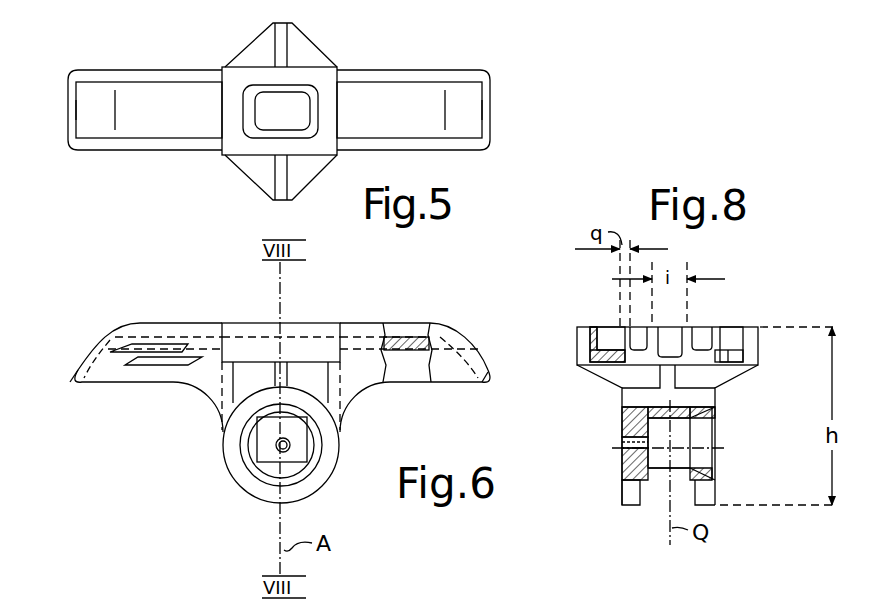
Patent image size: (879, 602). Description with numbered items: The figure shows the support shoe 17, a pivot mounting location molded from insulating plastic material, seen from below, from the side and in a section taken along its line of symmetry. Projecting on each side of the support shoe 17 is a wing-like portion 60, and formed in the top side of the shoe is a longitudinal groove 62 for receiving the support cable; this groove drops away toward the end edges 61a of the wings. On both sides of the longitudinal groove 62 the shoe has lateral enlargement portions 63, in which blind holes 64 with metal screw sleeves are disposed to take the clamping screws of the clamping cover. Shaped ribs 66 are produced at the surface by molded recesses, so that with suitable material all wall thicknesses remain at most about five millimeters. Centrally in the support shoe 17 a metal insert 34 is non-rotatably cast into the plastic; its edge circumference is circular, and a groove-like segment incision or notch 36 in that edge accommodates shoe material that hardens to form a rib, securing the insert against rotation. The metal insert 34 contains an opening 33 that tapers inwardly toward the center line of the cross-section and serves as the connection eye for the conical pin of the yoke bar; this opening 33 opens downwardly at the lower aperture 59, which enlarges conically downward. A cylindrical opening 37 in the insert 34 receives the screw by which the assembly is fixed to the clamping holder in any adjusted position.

In FIG. 5, the support shoe 17 is at (393, 59).
In FIG. 6, the support shoe 17 is at (158, 306).
In FIG. 8, the support shoe 17 is at (782, 325).
In FIG. 8, the opening 33 is at (705, 447).
In FIG. 6, the metal insert 34 is at (260, 468).
In FIG. 8, the metal insert 34 is at (634, 472).
In FIG. 6, the segment incision or notch 36 is at (268, 405).
In FIG. 8, the segment incision or notch 36 is at (622, 437).
In FIG. 8, the cylindrical opening 37 is at (622, 457).
In FIG. 8, the lower aperture 59 is at (658, 494).
In FIG. 6, the wing-like portion 60 is at (102, 373).
In FIG. 5, the end edge 61a is at (68, 108).
In FIG. 6, the end edge 61a is at (64, 386).
In FIG. 8, the longitudinal groove 62 is at (668, 343).
In FIG. 5, the lateral enlargement portion 63 is at (262, 172).
In FIG. 6, the lateral enlargement portion 63 is at (308, 352).
In FIG. 8, the lateral enlargement portion 63 is at (610, 376).
In FIG. 8, the blind hole 64 is at (608, 336).
In FIG. 8, the shaped rib 66 is at (628, 334).